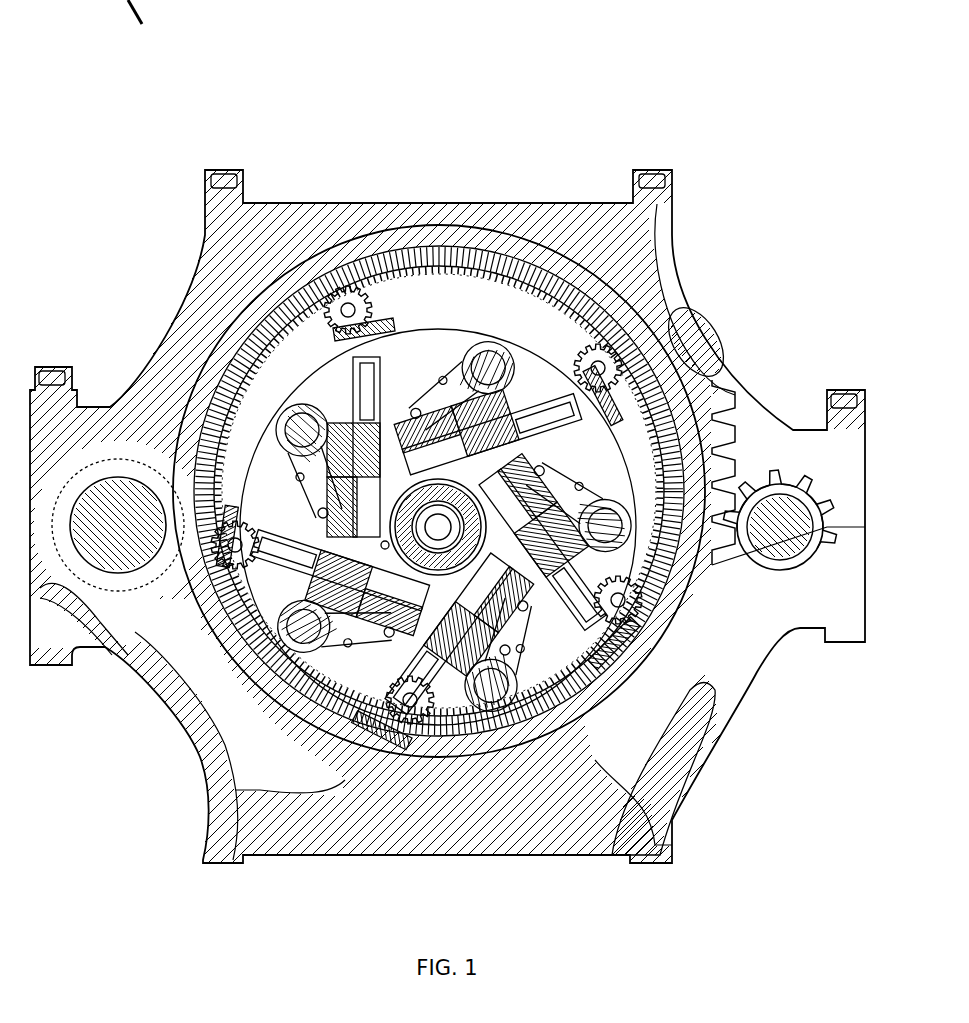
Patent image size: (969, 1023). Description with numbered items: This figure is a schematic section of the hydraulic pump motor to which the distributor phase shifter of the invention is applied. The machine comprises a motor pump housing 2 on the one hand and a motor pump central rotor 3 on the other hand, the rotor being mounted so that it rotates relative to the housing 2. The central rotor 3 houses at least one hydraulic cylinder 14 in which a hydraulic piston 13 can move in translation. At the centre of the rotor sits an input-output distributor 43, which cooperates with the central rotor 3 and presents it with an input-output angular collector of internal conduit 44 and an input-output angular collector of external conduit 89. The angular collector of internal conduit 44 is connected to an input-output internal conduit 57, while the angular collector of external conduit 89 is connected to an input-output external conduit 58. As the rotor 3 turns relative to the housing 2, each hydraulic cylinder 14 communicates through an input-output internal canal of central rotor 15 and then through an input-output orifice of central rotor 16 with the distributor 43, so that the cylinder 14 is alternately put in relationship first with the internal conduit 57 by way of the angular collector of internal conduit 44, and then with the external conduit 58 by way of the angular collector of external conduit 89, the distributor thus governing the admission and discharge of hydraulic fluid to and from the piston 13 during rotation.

The motor pump housing 2 is at (673, 290).
The motor pump central rotor 3 is at (497, 497).
The hydraulic piston 13 is at (487, 445).
The hydraulic cylinder 14 is at (360, 505).
The input-output internal canal of central rotor 15 is at (385, 545).
The input-output orifice of central rotor 16 is at (470, 615).
The input-output distributor 43 is at (450, 672).
The input-output angular collector of internal conduit 44 is at (385, 497).
The input-output internal conduit 57 is at (438, 525).
The input-output external conduit 58 is at (447, 547).
The input-output angular collector of external conduit 89 is at (505, 650).